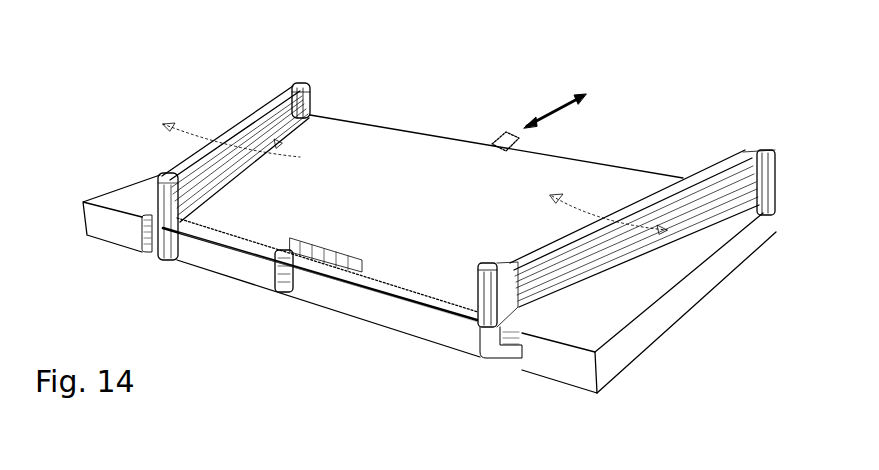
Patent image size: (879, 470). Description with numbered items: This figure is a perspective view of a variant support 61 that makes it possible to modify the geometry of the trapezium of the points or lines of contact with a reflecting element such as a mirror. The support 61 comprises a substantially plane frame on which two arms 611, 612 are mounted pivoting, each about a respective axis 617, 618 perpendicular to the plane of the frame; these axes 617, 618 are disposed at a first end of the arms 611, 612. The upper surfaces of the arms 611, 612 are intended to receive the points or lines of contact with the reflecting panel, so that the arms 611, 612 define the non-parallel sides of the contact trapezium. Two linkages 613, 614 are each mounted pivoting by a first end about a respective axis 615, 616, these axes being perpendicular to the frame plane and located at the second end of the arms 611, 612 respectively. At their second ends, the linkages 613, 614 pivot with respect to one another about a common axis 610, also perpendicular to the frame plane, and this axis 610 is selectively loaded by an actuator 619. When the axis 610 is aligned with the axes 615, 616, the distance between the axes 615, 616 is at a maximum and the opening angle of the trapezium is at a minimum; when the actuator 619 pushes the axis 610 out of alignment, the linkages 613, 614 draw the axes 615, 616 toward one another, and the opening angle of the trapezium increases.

The support 61 is at (678, 288).
The axis 610 is at (292, 261).
The arm 611 is at (697, 215).
The arm 612 is at (190, 167).
The linkage 613 is at (447, 337).
The linkage 614 is at (233, 262).
The axis 615 is at (489, 262).
The axis 616 is at (157, 175).
The axis 617 is at (765, 151).
The axis 618 is at (298, 86).
The actuator 619 is at (499, 137).